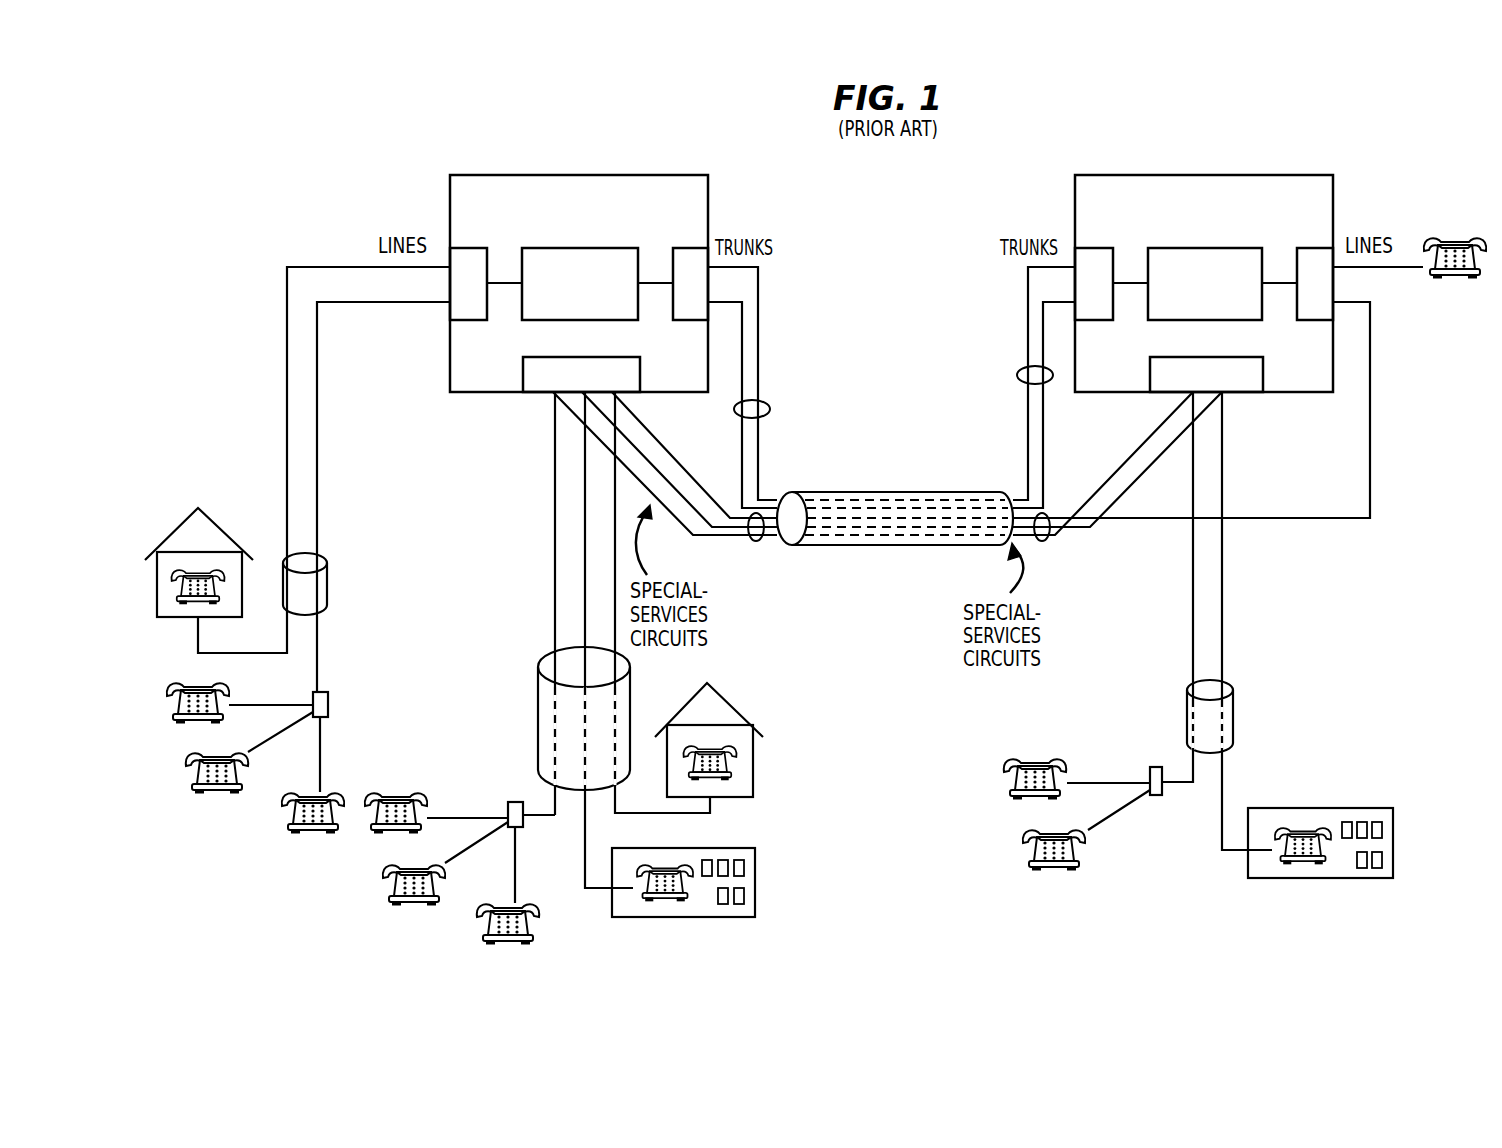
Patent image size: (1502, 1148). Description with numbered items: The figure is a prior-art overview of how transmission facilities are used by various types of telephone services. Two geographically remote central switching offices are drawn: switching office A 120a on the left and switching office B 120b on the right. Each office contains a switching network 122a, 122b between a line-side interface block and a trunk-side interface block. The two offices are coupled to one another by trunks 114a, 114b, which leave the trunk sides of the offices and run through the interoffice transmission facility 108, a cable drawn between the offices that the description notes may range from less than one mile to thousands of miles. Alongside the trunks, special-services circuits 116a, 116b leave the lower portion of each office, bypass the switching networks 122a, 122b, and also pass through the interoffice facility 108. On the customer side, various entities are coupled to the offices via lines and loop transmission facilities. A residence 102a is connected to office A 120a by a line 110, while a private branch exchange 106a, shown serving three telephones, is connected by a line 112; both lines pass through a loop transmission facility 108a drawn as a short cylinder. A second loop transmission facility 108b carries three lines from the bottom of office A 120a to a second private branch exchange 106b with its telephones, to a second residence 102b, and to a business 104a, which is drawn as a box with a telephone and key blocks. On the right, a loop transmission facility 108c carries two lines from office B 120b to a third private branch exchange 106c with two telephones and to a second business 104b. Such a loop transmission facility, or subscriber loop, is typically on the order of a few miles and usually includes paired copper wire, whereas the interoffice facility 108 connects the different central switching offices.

The residence 102a is at (215, 523).
The residence 102b is at (753, 773).
The business 104a is at (695, 917).
The business 104b is at (1330, 878).
The private branch exchange 106a is at (329, 707).
The private branch exchange 106b is at (508, 802).
The private branch exchange 106c is at (1155, 767).
The interoffice transmission facility 108 is at (873, 547).
The loop transmission facility 108a is at (327, 588).
The loop transmission facility 108b is at (537, 688).
The loop transmission facility 108c is at (1234, 708).
The line 110 is at (287, 338).
The line 112 is at (317, 417).
The trunks 114a is at (770, 412).
The trunks 114b is at (1017, 375).
The special-services circuits 116a is at (755, 541).
The special-services circuits 116b is at (1042, 542).
The central switching office 120a is at (710, 197).
The central switching office 120b is at (1335, 197).
The switching network 122a is at (538, 322).
The switching network 122b is at (1167, 320).